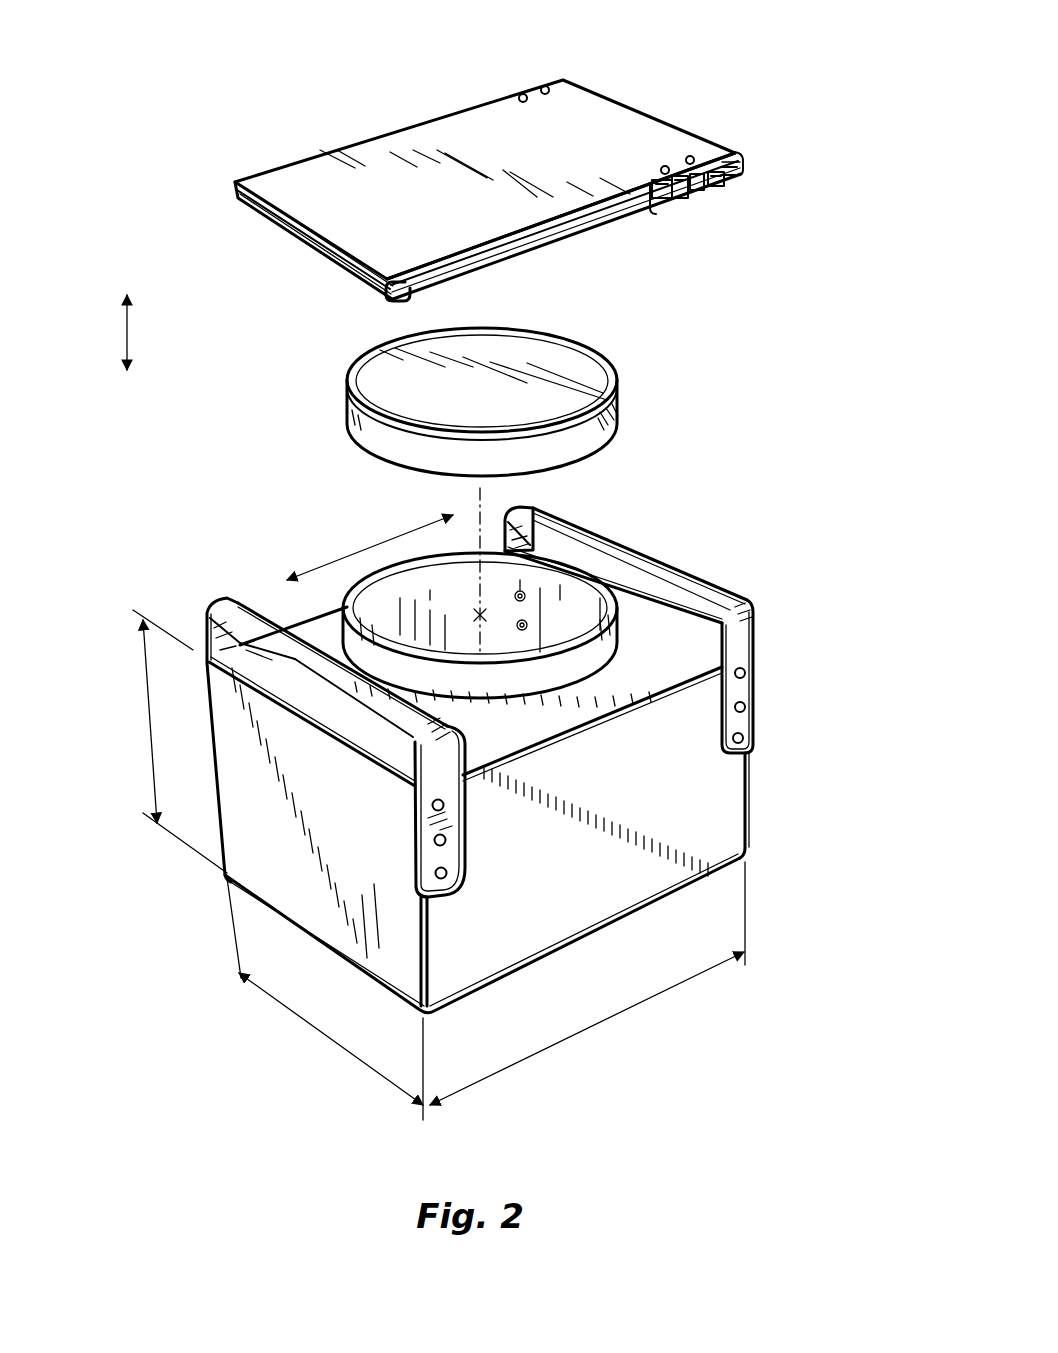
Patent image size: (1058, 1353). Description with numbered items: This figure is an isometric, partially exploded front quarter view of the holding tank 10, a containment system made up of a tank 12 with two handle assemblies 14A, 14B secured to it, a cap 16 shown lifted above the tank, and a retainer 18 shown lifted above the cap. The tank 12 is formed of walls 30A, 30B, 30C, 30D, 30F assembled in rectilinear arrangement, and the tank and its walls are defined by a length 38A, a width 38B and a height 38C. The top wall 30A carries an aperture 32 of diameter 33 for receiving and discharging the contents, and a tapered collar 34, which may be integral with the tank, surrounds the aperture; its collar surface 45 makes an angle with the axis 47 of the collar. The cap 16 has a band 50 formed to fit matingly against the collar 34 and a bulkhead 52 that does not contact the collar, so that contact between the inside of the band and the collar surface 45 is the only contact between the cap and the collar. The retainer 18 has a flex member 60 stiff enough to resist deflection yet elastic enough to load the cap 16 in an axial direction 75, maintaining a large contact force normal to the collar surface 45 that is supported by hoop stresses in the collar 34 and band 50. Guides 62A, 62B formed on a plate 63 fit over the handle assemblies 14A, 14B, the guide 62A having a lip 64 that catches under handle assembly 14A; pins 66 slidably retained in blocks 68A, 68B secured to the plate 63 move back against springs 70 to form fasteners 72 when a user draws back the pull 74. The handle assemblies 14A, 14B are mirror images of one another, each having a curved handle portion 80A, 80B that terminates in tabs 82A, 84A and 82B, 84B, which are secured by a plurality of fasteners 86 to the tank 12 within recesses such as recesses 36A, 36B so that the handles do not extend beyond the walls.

The holding tank 10 is at (479, 786).
The tank 12 is at (479, 786).
The handle assembly 14A is at (265, 733).
The handle assembly 14B is at (659, 676).
The cap 16 is at (535, 372).
The retainer 18 is at (538, 156).
The wall 30A is at (703, 580).
The wall 30B is at (655, 530).
The wall 30C is at (270, 857).
The wall 30D is at (372, 598).
The wall 30F is at (520, 925).
The aperture 32 is at (453, 607).
The diameter 33 is at (352, 612).
The collar 34 is at (300, 572).
The recess 36A is at (748, 757).
The recess 36B is at (417, 990).
The length 38A is at (590, 1027).
The width 38B is at (312, 1027).
The height 38C is at (150, 725).
The collar surface 45 is at (280, 603).
The axis 47 is at (497, 500).
The band 50 is at (620, 415).
The bulkhead 52 is at (482, 382).
The flex member 60 is at (485, 143).
The guide 62A is at (347, 270).
The guide 62B is at (740, 163).
The plate 63 is at (577, 103).
The lip 64 is at (402, 283).
The pin 66 is at (708, 177).
The block 68A is at (670, 193).
The block 68B is at (700, 185).
The spring 70 is at (682, 187).
The fastener 72 is at (530, 92).
The pull 74 is at (643, 210).
The axial direction 75 is at (127, 325).
The handle portion 80A is at (207, 627).
The handle portion 80B is at (690, 562).
The tab 82A is at (197, 650).
The tab 82B is at (540, 525).
The tab 84A is at (437, 853).
The tab 84B is at (742, 636).
The fastener 86 is at (746, 707).